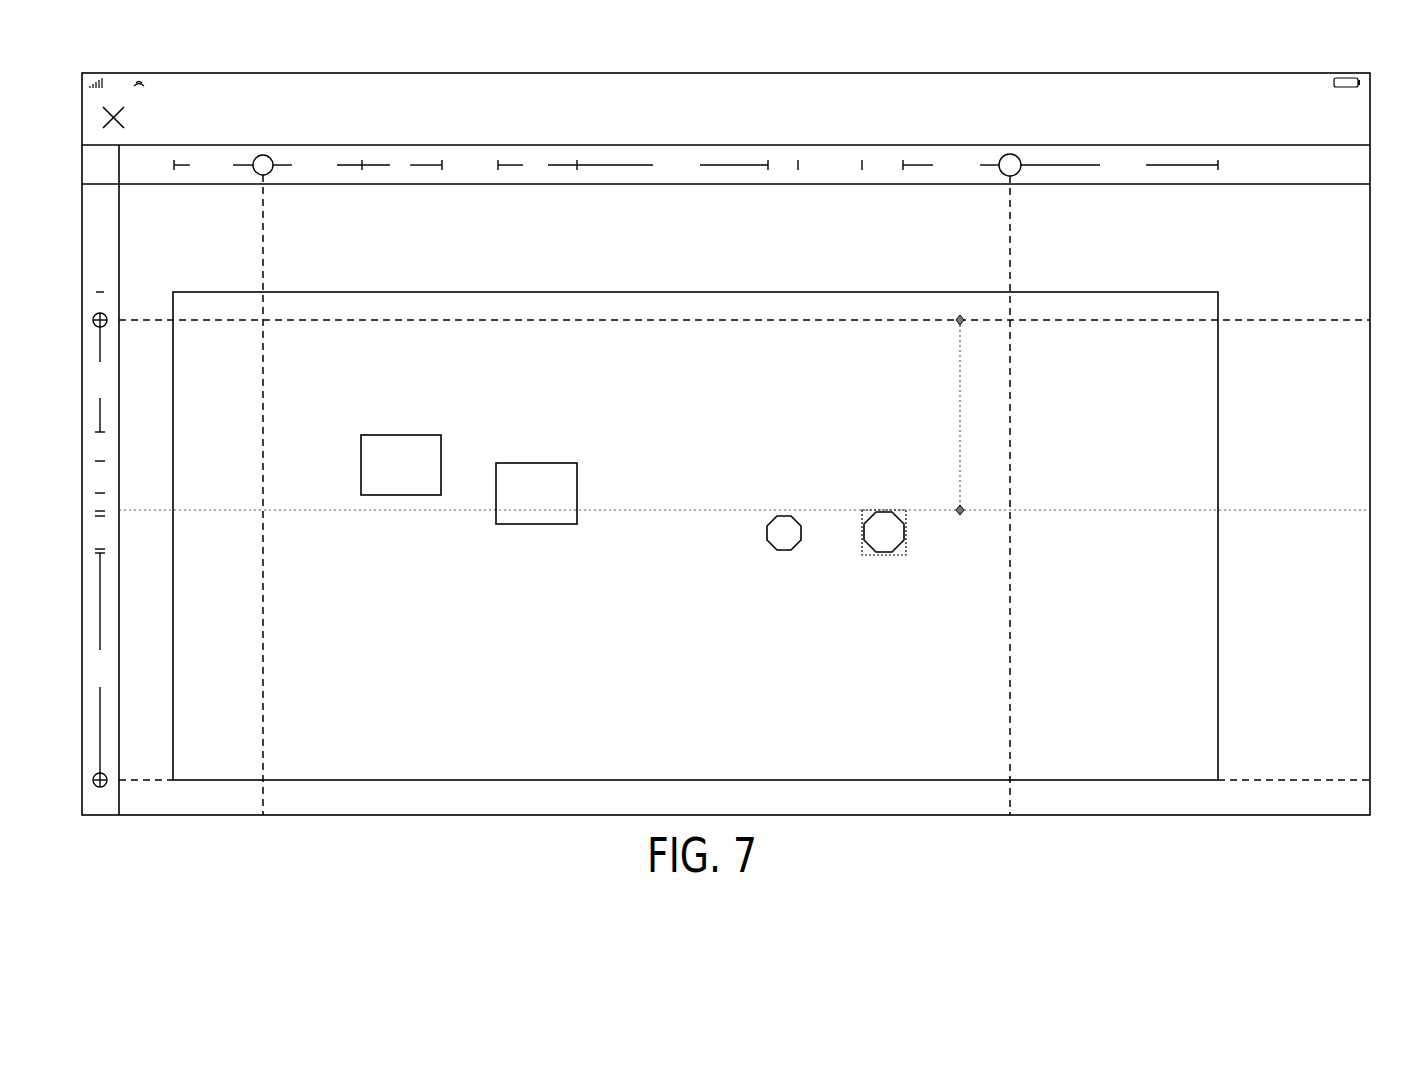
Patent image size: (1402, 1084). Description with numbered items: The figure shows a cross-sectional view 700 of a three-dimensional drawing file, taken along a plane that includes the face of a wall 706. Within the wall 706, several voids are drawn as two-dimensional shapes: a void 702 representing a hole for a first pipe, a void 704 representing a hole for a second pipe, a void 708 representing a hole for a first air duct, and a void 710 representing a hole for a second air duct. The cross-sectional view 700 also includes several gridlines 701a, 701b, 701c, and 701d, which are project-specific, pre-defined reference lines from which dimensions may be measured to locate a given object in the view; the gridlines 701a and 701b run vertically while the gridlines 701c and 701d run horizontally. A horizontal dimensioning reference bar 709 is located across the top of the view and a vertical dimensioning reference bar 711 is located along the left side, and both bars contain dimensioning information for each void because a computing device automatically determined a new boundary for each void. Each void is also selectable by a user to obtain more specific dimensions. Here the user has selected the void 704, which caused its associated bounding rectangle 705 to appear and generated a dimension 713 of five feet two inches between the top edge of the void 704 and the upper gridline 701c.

The cross-sectional view 700 is at (1015, 70).
The gridline 701a is at (265, 247).
The gridline 701b is at (1012, 240).
The upper gridline 701c is at (1283, 318).
The gridline 701d is at (1285, 778).
The void 702 is at (783, 513).
The void 704 is at (893, 513).
The bounding rectangle 705 is at (872, 513).
The wall 706 is at (512, 290).
The void 708 is at (400, 433).
The horizontal dimensioning reference bar 709 is at (72, 146).
The void 710 is at (537, 462).
The vertical dimensioning reference bar 711 is at (78, 822).
The dimension 713 is at (1003, 433).